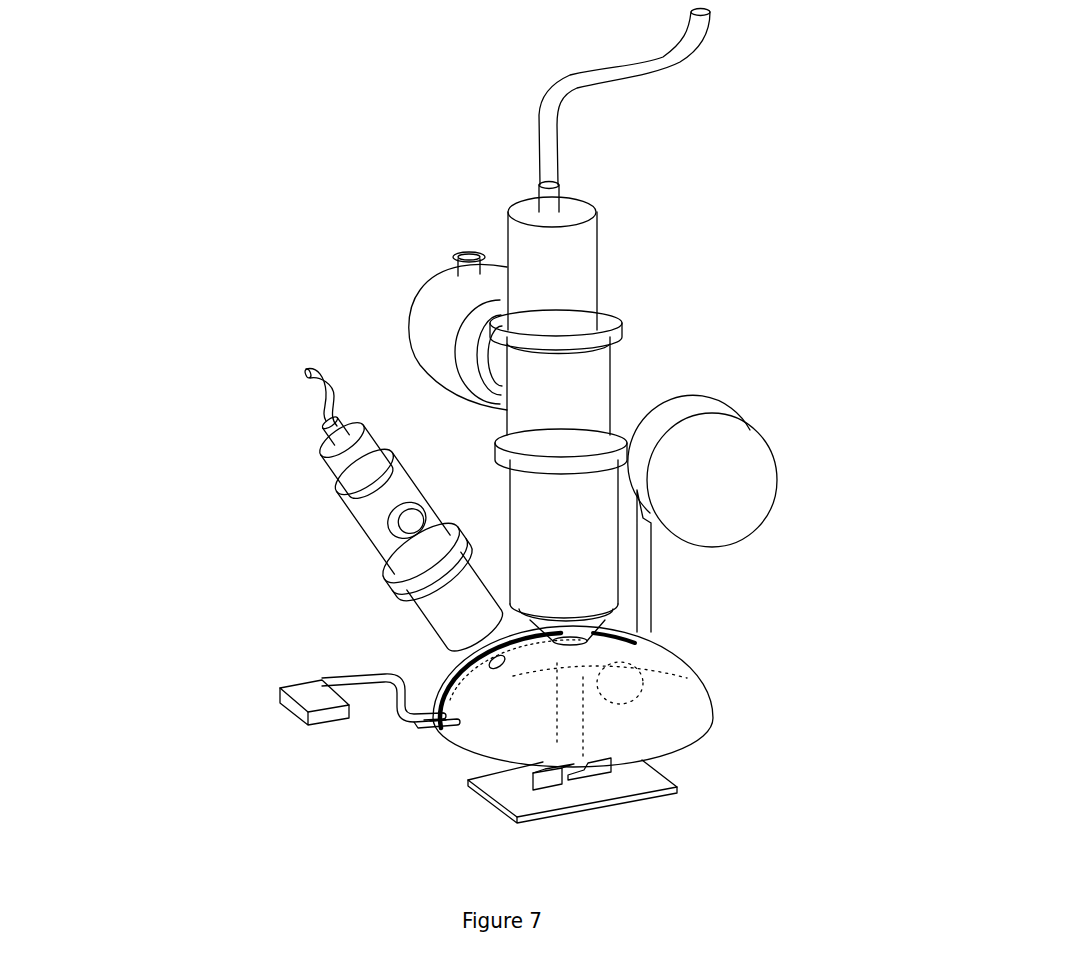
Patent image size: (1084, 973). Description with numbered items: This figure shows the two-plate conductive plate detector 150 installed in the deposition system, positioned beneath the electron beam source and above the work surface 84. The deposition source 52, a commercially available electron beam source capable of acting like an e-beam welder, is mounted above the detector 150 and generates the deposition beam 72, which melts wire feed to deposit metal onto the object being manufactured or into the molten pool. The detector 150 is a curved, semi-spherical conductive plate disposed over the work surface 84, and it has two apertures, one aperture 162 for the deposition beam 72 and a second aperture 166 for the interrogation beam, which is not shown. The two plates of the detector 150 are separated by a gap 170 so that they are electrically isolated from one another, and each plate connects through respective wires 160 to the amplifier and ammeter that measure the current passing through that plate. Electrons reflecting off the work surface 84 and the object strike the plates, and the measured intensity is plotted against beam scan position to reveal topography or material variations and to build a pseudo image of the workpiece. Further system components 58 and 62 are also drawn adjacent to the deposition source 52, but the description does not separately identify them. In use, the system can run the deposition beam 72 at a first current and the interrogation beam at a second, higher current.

The deposition source 52 is at (542, 262).
The disc cartridge 62 is at (710, 460).
The sensor assembly 58 is at (373, 513).
The aperture 162 is at (597, 630).
The detector 150 is at (712, 702).
The gap 170 is at (440, 742).
The aperture 166 is at (490, 660).
The wires 160 is at (358, 678).
The work surface 84 is at (648, 782).
The deposition beam 72 is at (567, 773).